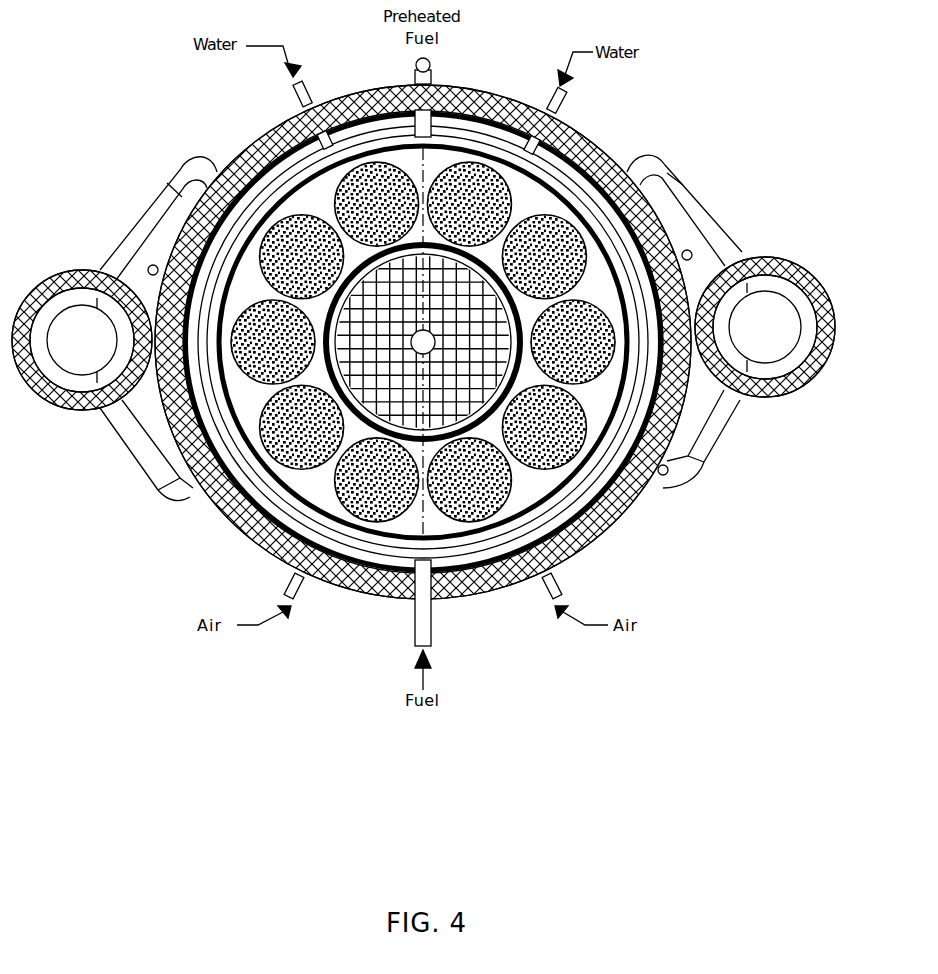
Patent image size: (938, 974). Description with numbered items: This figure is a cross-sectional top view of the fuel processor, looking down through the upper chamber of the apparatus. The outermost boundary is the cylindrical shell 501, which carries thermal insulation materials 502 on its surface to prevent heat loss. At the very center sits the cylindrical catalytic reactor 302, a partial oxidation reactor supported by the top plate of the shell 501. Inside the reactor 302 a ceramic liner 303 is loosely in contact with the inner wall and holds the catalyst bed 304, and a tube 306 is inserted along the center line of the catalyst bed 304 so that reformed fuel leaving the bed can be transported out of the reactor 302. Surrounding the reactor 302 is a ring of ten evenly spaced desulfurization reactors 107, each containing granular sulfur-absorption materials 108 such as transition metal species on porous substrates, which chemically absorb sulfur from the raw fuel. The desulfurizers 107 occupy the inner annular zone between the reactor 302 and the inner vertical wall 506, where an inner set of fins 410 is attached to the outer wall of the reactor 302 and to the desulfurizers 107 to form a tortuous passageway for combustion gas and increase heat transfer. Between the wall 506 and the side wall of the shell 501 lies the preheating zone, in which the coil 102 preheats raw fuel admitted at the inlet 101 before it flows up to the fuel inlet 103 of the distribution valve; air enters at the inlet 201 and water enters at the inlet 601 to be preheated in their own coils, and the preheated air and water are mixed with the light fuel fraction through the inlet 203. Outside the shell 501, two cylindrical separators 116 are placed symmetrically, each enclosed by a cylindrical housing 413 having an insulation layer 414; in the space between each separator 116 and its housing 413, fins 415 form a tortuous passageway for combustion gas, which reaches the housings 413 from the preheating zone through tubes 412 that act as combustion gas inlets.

The inlet 101 is at (431, 625).
The preheating coil 102 is at (568, 183).
The fuel inlet 103 is at (431, 62).
The desulfurization reactor 107 is at (337, 148).
The granular sulfur-absorption material 108 is at (267, 288).
The separator 116 is at (772, 333).
The air inlet 201 is at (296, 590).
The inlet 203 is at (690, 262).
The catalytic reactor 302 is at (335, 363).
The ceramic liner 303 is at (405, 400).
The catalyst bed 304 is at (300, 472).
The tube 306 is at (423, 342).
The inner set of fins 410 is at (215, 255).
The tube 412 is at (728, 425).
The cylindrical housing 413 is at (813, 283).
The insulation layer 414 is at (772, 290).
The fins 415 is at (805, 327).
The cylindrical shell 501 is at (637, 492).
The thermal insulation material 502 is at (603, 532).
The inner vertical wall 506 is at (538, 173).
The water inlet 601 is at (300, 86).